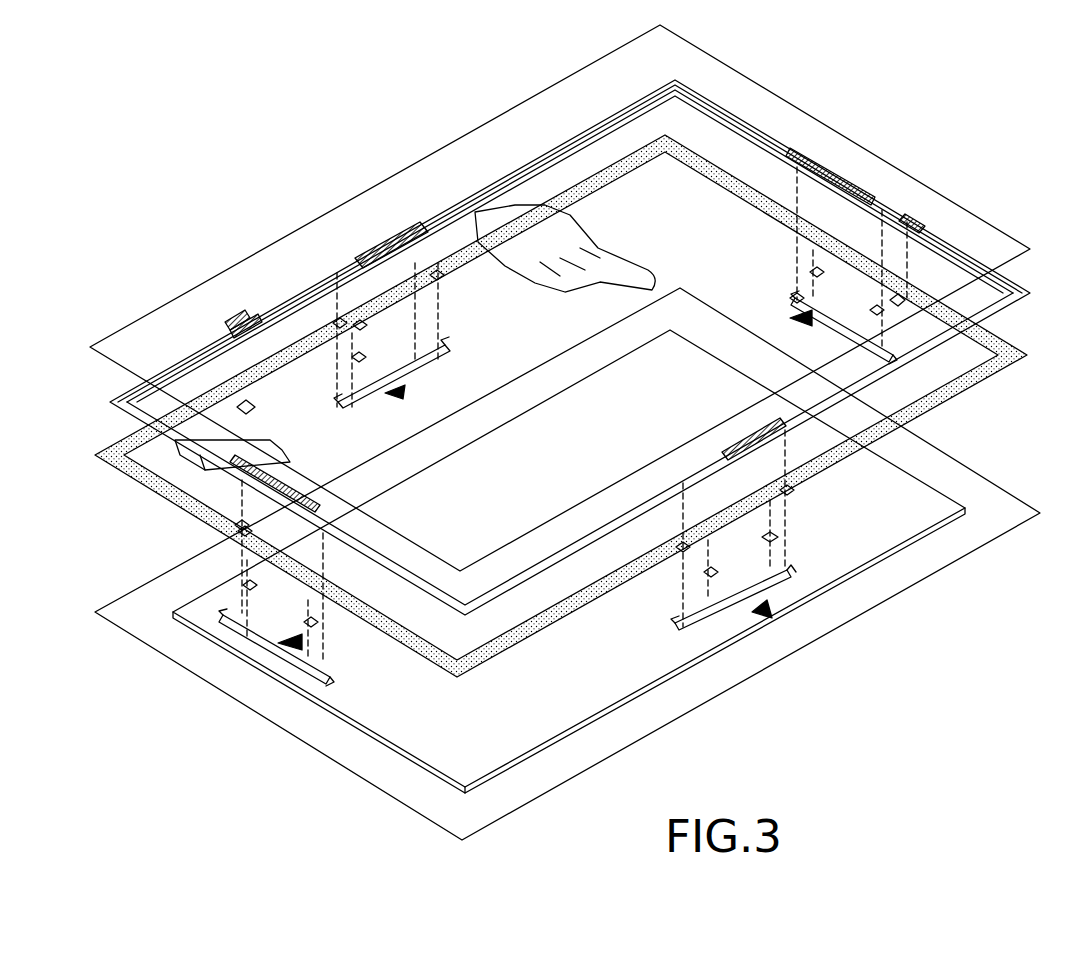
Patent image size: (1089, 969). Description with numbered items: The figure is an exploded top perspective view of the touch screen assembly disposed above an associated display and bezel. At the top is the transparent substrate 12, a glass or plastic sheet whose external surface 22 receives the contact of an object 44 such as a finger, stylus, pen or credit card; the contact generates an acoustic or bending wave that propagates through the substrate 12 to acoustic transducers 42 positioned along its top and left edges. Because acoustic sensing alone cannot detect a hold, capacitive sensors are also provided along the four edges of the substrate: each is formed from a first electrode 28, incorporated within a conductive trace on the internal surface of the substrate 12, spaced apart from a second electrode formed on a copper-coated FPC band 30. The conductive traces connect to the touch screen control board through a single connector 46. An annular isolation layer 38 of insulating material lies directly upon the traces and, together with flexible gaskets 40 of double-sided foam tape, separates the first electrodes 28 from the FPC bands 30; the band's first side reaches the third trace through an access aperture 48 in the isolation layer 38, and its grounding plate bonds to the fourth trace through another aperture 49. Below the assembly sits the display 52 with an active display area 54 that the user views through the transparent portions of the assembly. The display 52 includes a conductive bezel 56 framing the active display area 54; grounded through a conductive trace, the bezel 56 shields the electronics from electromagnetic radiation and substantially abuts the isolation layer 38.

The transparent substrate 12 is at (955, 248).
The external surface 22 is at (975, 255).
The first electrode 28 is at (378, 248).
The FPC band 30 is at (405, 392).
The isolation layer 38 is at (1008, 345).
The flexible gasket 40 is at (778, 538).
The acoustic transducer 42 is at (255, 407).
The object 44 is at (625, 268).
The connector 46 is at (283, 452).
The access aperture 48 is at (337, 320).
The aperture 49 is at (444, 276).
The display 52 is at (613, 690).
The active display area 54 is at (483, 754).
The bezel 56 is at (902, 578).